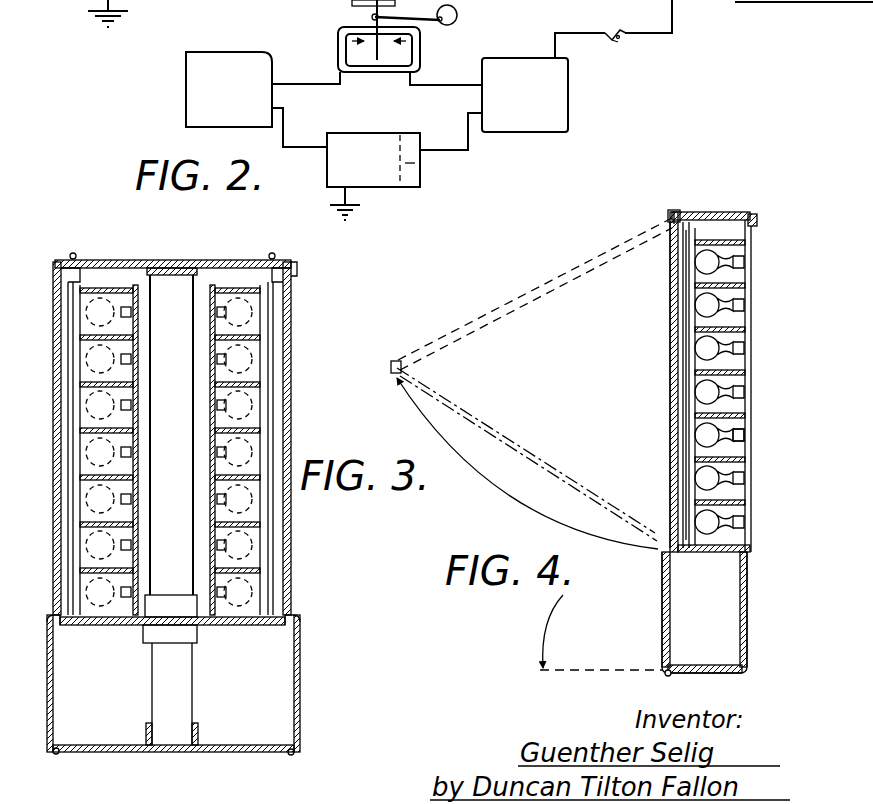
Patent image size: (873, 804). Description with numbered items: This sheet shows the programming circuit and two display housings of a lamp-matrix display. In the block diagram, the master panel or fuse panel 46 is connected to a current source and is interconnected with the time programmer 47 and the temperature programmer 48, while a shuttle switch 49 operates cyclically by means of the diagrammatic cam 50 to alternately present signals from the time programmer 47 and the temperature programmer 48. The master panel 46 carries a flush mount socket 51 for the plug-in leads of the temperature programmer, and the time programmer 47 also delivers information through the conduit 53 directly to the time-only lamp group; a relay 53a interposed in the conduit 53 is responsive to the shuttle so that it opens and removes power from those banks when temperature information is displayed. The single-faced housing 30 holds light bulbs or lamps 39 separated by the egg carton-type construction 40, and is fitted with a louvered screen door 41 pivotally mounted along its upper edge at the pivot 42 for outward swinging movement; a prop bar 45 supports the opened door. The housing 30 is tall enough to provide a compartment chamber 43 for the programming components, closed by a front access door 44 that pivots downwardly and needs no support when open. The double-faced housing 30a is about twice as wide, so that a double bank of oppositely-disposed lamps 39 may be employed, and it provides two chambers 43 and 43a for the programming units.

In FIG. 4, the housing 30 is at (736, 210).
In FIG. 3, the housing 30a is at (218, 262).
In FIG. 4, the light bulbs or lamps 39 is at (708, 393).
In FIG. 3, the egg carton-type construction 40 is at (95, 422).
In FIG. 4, the egg carton-type construction 40 is at (745, 455).
In FIG. 4, the louvered screen door 41 is at (670, 353).
In FIG. 4, the pivot mounting 42 is at (674, 212).
In FIG. 3, the compartment chamber 43 is at (117, 703).
In FIG. 4, the compartment chamber 43 is at (722, 612).
In FIG. 3, the compartment chamber 43a is at (248, 702).
In FIG. 2, the front access door 44 is at (74, 15).
In FIG. 4, the front access door 44 is at (661, 598).
In FIG. 4, the prop bar 45 is at (684, 436).
In FIG. 2, the master panel or fuse panel 46 is at (388, 183).
In FIG. 2, the time programmer 47 is at (546, 75).
In FIG. 2, the temperature programmer 48 is at (250, 73).
In FIG. 2, the shuttle switch 49 is at (428, 60).
In FIG. 2, the cam 50 is at (458, 12).
In FIG. 2, the flush mount socket 51 is at (619, 26).
In FIG. 2, the conduit 53 is at (643, 36).
In FIG. 2, the relay 53a is at (611, 40).